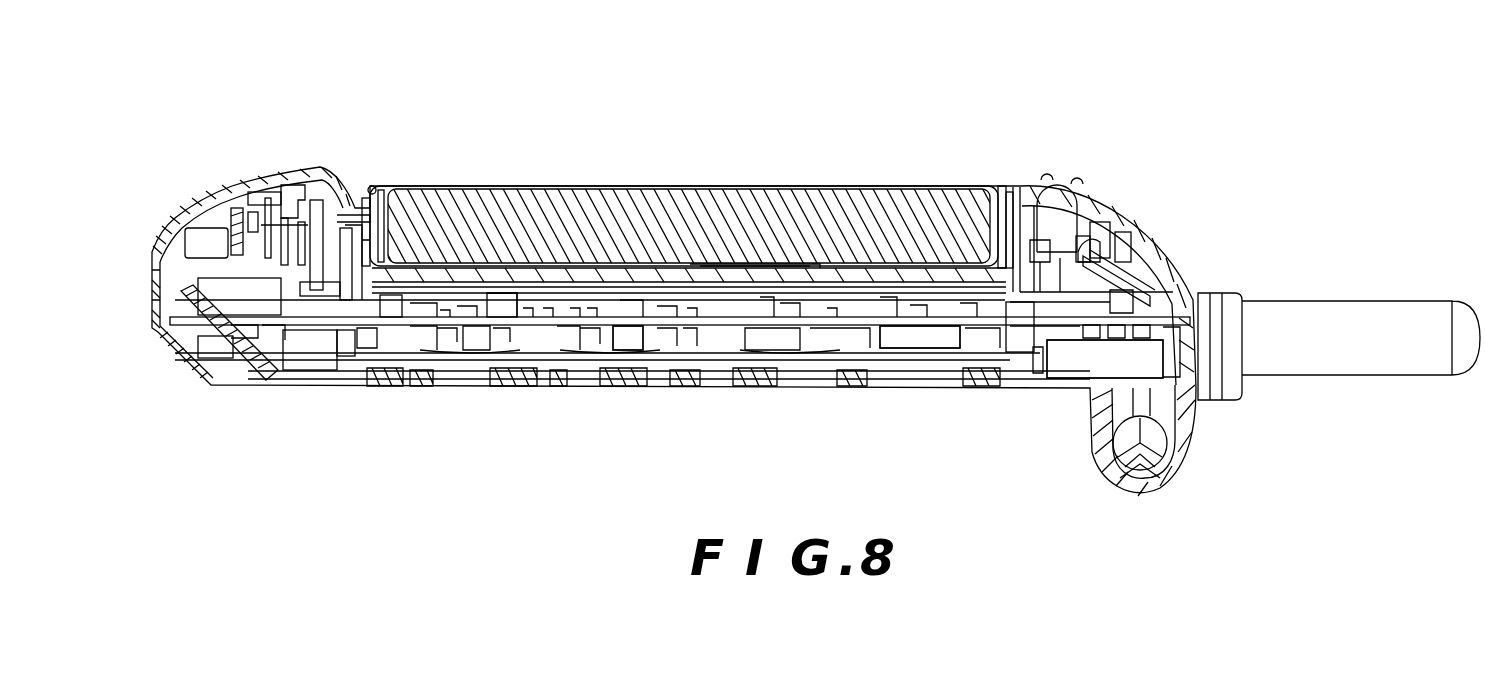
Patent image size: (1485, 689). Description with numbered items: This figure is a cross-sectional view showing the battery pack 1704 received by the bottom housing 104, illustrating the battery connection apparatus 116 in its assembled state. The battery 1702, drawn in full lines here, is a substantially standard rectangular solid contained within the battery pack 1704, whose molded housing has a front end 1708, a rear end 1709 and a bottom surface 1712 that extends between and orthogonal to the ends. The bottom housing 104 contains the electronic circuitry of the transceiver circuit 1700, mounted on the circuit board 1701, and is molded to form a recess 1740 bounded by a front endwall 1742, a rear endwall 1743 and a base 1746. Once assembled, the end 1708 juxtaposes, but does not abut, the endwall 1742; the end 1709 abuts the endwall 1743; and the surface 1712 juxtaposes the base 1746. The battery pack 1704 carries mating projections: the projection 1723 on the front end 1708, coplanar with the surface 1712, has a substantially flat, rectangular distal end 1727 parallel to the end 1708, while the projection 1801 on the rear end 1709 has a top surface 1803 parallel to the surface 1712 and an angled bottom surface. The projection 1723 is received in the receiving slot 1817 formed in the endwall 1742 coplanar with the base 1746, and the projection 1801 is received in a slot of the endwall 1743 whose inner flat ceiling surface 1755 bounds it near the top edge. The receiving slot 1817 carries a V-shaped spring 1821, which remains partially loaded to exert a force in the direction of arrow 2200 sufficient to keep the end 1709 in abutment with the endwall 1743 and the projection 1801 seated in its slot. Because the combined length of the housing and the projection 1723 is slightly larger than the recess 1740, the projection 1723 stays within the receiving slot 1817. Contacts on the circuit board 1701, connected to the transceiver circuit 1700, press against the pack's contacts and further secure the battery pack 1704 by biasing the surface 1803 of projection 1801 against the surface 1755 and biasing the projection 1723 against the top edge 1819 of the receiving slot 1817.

The bottom housing 104 is at (1166, 252).
The battery connection apparatus 116 is at (1125, 97).
The transceiver circuit 1700 is at (740, 301).
The circuit board 1701 is at (817, 282).
The battery 1702 is at (628, 207).
The battery pack 1704 is at (850, 187).
The front end 1708 is at (947, 282).
The rear end 1709 is at (418, 212).
The bottom surface 1712 is at (597, 282).
The projection 1723 is at (1018, 282).
The distal end 1727 is at (1082, 246).
The recess 1740 is at (1000, 182).
The front endwall 1742 is at (1007, 247).
The rear endwall 1743 is at (385, 282).
The base 1746 is at (500, 282).
The inner flat ceiling surface 1755 is at (330, 240).
The projection 1801 is at (346, 330).
The top surface 1803 is at (362, 226).
The receiving slot 1817 is at (1080, 247).
The top edge 1819 is at (1035, 245).
The spring 1821 is at (1055, 300).
The arrow 2200 is at (1145, 535).